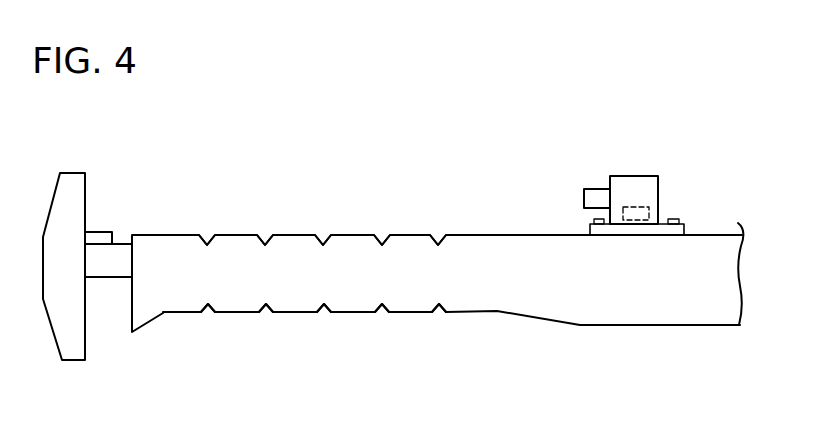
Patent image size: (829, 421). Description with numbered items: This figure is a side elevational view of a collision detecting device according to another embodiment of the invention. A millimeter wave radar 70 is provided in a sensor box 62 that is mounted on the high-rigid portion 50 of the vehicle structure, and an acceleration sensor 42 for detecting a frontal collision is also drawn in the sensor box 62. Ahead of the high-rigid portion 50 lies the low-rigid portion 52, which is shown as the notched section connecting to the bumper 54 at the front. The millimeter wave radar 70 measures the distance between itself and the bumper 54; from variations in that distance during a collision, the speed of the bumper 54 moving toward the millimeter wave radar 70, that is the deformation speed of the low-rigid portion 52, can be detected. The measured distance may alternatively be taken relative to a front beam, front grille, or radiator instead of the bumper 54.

The bumper 54 is at (71, 182).
The high-rigid portion 50 is at (621, 302).
The low-rigid portion 52 is at (348, 292).
The sensor box 62 is at (624, 175).
The millimeter wave radar 70 is at (596, 190).
The acceleration sensor 42 is at (650, 200).